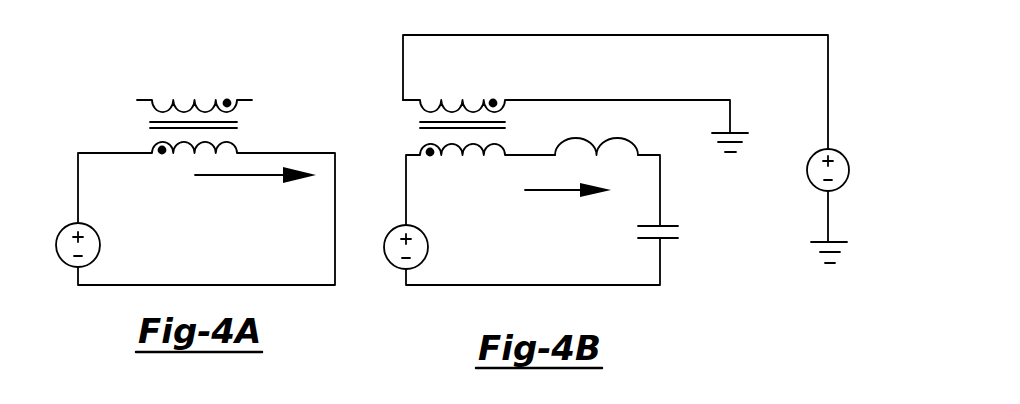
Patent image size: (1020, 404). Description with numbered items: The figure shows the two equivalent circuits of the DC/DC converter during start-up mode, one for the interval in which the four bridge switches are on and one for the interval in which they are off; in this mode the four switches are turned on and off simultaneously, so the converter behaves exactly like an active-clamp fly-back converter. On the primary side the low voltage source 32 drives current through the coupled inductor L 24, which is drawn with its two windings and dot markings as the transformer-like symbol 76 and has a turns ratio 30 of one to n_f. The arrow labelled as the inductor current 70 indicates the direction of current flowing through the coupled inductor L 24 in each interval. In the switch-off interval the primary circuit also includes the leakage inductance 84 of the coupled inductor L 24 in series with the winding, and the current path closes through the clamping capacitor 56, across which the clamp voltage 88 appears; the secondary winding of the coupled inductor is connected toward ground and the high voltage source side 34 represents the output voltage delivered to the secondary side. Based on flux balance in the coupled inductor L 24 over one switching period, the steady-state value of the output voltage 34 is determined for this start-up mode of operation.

In FIG. 4A, the coupled inductor L 24 is at (178, 188).
In FIG. 4B, the coupled inductor L 24 is at (473, 190).
In FIG. 4A, the turns ratio of coupled inductor 30 is at (100, 137).
In FIG. 4A, the low voltage source 32 is at (62, 230).
In FIG. 4B, the low voltage source 32 is at (385, 247).
In FIG. 4B, the high voltage source side 34 is at (868, 167).
In FIG. 4B, the clamping capacitor 56 is at (622, 267).
In FIG. 4A, the inductor current 70 is at (280, 200).
In FIG. 4B, the inductor current 70 is at (542, 225).
In FIG. 4A, the transformer T1 76 is at (200, 62).
In FIG. 4B, the transformer T1 76 is at (455, 71).
In FIG. 4B, the leakage inductance 84 is at (622, 160).
In FIG. 4B, the voltage on clamping capacitor 88 is at (708, 222).